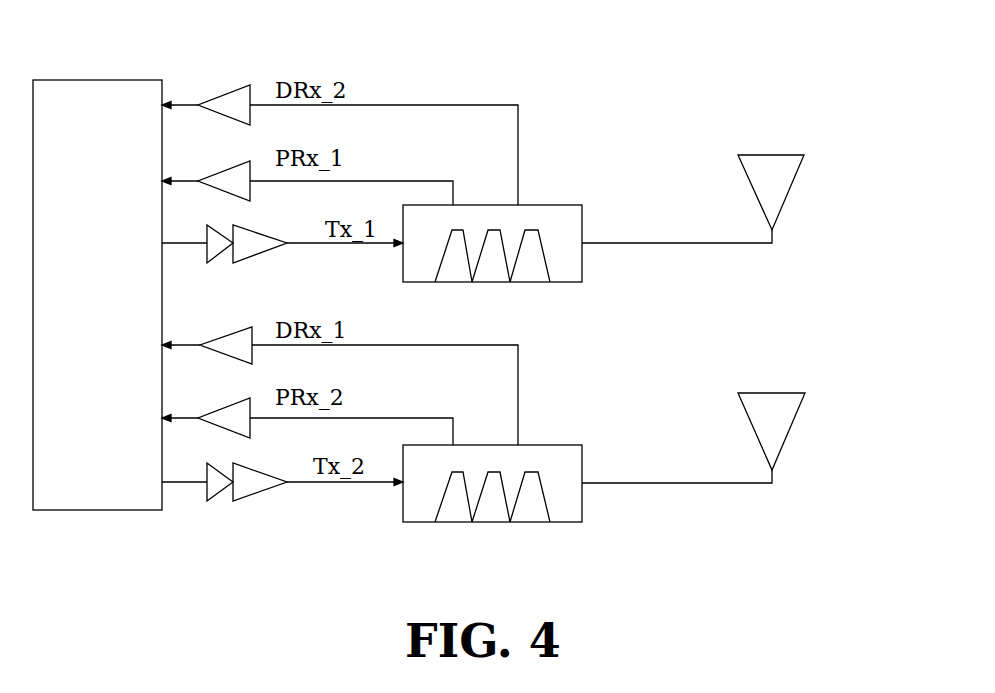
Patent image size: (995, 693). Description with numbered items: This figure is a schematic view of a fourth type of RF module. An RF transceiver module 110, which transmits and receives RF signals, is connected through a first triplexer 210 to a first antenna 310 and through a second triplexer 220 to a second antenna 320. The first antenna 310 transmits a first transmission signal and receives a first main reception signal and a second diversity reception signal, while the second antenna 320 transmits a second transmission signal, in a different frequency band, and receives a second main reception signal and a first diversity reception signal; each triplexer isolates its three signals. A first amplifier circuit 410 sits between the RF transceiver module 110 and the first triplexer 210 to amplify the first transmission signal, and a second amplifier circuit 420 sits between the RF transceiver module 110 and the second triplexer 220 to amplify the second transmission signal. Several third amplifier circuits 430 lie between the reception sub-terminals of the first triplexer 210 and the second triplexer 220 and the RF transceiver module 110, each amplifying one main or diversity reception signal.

The RF transceiver module 110 is at (162, 80).
The first triplexer 210 is at (582, 205).
The second triplexer 220 is at (582, 522).
The first antenna 310 is at (804, 155).
The second antenna 320 is at (805, 393).
The first amplifier circuit 410 is at (258, 258).
The second amplifier circuit 420 is at (258, 498).
The third amplifier circuit 430 is at (250, 85).